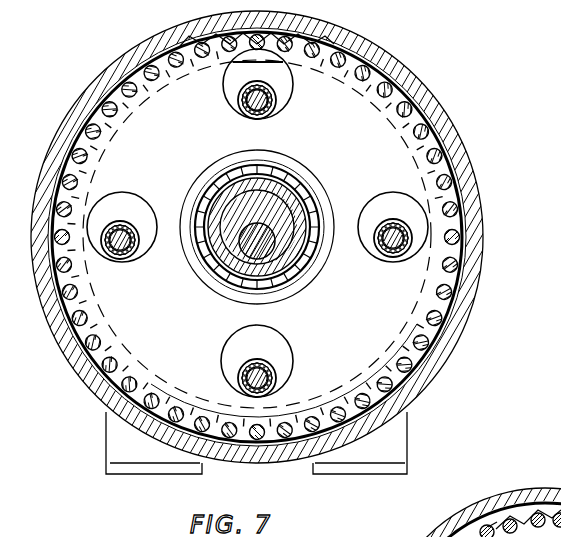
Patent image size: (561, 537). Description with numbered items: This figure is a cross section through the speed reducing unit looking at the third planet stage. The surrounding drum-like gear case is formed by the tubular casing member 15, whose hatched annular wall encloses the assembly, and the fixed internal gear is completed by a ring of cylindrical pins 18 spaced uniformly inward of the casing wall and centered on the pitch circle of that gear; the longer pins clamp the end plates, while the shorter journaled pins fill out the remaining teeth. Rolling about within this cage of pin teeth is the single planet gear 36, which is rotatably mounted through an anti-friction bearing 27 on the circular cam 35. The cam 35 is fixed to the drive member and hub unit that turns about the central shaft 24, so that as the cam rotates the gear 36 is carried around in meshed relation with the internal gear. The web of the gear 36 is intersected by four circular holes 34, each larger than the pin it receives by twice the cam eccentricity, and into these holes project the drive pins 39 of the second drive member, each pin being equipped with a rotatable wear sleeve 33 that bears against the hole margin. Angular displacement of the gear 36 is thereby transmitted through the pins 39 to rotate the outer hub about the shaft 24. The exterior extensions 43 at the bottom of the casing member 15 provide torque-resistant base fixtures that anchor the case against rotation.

The tubular casing member 15 is at (420, 100).
The cylindrical pins 18 is at (368, 54).
The shaft 24 is at (252, 251).
The anti-friction bearing 27 is at (298, 172).
The wear sleeve 33 is at (277, 115).
The holes 34 is at (225, 89).
The circular cam 35 is at (280, 210).
The planet gear 36 is at (281, 99).
The drive pins 39 is at (240, 115).
The exterior extension 43 is at (108, 456).